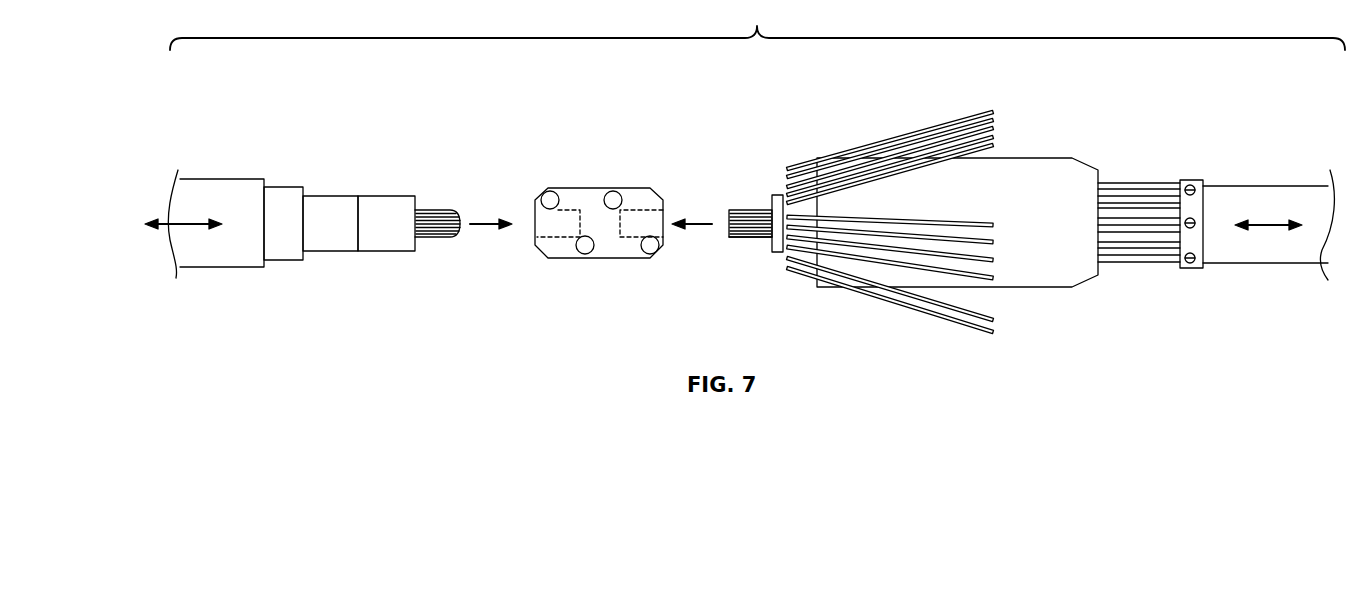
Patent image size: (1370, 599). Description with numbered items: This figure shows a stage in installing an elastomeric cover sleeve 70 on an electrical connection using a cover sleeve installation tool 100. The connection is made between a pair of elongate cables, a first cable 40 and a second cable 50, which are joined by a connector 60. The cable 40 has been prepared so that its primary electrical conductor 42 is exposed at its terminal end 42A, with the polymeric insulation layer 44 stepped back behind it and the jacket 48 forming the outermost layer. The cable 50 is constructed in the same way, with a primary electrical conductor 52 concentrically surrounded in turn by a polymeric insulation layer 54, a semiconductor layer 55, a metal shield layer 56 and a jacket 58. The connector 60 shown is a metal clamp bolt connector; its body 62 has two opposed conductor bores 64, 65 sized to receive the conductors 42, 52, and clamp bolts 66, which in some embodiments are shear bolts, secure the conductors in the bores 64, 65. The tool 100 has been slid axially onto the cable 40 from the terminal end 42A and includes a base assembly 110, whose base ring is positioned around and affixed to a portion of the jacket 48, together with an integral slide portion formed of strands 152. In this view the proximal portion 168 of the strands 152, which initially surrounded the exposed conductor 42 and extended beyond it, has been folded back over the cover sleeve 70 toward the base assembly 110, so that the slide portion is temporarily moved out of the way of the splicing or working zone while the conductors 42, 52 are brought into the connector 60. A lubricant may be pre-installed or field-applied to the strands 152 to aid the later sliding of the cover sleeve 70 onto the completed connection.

The cable 40 is at (1268, 213).
The primary electrical conductor 42 is at (745, 215).
The terminal end 42A is at (728, 227).
The polymeric insulation layer 44 is at (778, 195).
The jacket 48 is at (1243, 252).
The cable 50 is at (294, 250).
The primary electrical conductor 52 is at (435, 217).
The polymeric insulation layer 54 is at (385, 203).
The semiconductor layer 55 is at (325, 205).
The metal shield layer 56 is at (283, 192).
The jacket 58 is at (210, 183).
The connector 60 is at (607, 249).
The body 62 is at (593, 192).
The conductor bore 64 is at (637, 220).
The conductor bore 65 is at (568, 220).
The clamp bolts 66 is at (587, 250).
The cover sleeve 70 is at (1022, 170).
The cover sleeve installation tool 100 is at (1013, 191).
The base assembly 110 is at (1200, 182).
The strands 152 is at (855, 152).
The proximal portion 168 is at (890, 191).